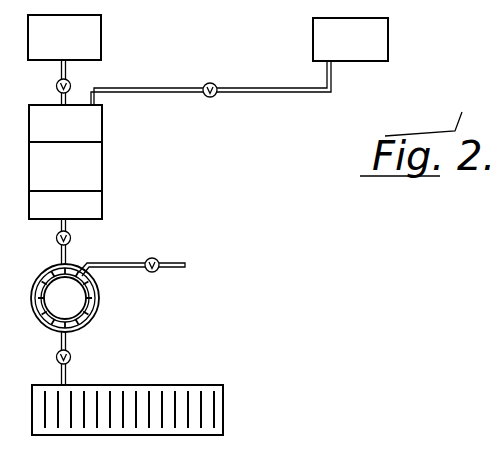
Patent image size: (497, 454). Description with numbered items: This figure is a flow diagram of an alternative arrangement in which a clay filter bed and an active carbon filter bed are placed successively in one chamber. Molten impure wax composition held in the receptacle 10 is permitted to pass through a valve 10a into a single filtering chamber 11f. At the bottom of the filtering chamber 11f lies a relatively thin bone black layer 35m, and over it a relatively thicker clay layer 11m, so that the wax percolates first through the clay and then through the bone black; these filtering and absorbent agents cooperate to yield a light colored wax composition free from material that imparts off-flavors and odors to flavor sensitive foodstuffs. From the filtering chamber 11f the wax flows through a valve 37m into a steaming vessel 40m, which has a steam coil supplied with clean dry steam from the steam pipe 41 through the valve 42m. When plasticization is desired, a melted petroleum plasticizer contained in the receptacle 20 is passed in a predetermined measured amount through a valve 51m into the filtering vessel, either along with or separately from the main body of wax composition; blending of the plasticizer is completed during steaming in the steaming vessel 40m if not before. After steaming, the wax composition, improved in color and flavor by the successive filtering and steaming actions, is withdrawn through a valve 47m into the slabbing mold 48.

The receptacle 10 is at (88, 37).
The valve 10a is at (71, 83).
The receptacle 20 is at (378, 30).
The valve 51m is at (210, 98).
The filtering chamber 11f is at (96, 127).
The clay layer 11m is at (88, 167).
The bone black layer 35m is at (88, 208).
The valve 37m is at (72, 239).
The steaming vessel 40m is at (99, 303).
The steam pipe 41 is at (178, 262).
The valve 42m is at (155, 272).
The discharge valve 47m is at (72, 357).
The slabbing mold 48 is at (210, 393).